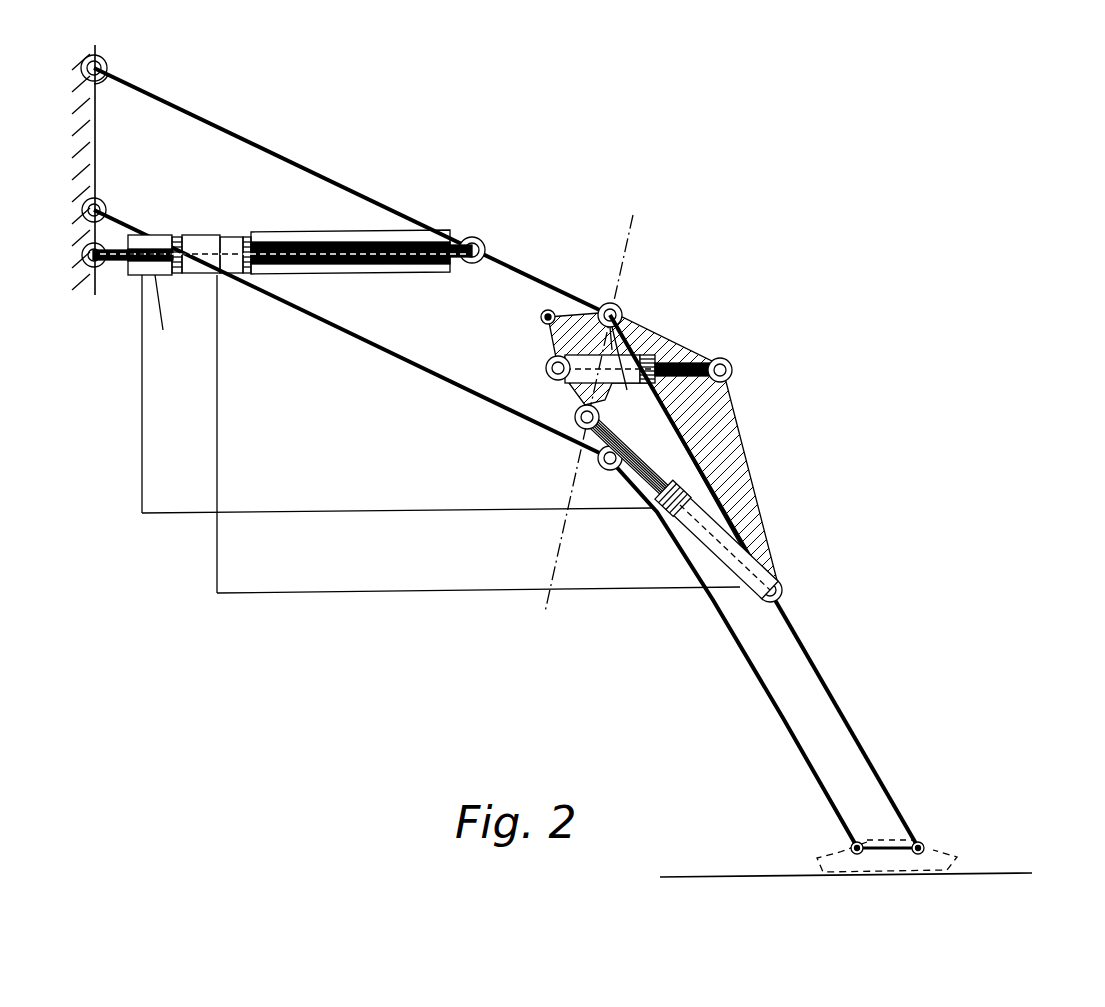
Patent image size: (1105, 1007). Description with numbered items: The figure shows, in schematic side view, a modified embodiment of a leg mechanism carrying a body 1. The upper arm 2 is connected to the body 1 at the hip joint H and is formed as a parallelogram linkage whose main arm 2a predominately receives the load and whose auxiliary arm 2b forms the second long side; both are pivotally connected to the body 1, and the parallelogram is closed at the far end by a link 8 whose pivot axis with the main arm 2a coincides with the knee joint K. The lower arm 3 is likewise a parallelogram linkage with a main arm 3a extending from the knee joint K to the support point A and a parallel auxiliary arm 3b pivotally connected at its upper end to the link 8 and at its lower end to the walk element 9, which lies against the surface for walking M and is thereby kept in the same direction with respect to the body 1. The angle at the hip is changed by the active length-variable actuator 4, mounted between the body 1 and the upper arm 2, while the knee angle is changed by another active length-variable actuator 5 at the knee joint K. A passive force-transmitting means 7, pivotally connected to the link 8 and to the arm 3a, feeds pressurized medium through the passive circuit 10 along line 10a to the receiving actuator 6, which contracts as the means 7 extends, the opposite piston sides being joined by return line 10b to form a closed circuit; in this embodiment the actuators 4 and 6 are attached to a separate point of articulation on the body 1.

The body 1 is at (97, 152).
The upper arm 2 is at (234, 166).
The main arm 2a is at (342, 186).
The auxiliary arm 2b is at (351, 334).
The lower arm 3 is at (795, 666).
The main arm 3a is at (823, 685).
The auxiliary arm 3b is at (767, 692).
The active length-variable actuator 4 is at (380, 277).
The active length-variable actuator 5 is at (663, 345).
The receiving actuator 6 is at (159, 394).
The passive force-transmitting means 7 is at (676, 536).
The link 8 is at (578, 300).
The walk element 9 is at (820, 860).
The passive circuit 10 is at (441, 505).
The line 10a is at (265, 512).
The return line 10b is at (470, 594).
The hip joint H is at (106, 63).
The knee joint K is at (620, 304).
The support point A is at (925, 848).
The surface for walking M is at (1035, 870).